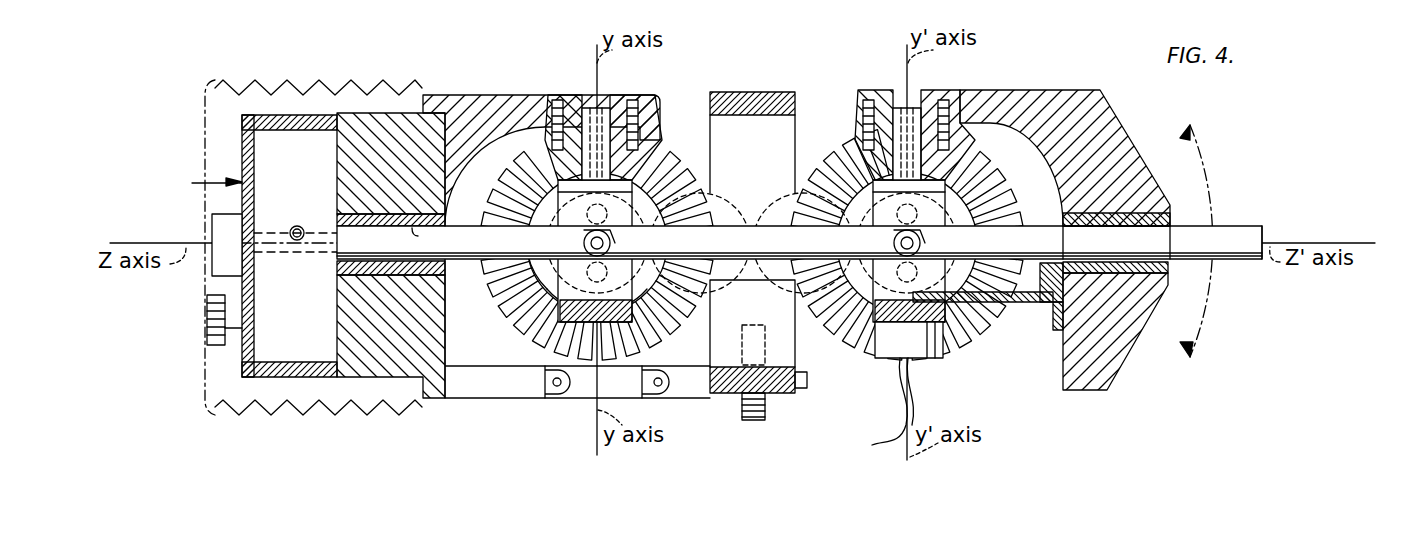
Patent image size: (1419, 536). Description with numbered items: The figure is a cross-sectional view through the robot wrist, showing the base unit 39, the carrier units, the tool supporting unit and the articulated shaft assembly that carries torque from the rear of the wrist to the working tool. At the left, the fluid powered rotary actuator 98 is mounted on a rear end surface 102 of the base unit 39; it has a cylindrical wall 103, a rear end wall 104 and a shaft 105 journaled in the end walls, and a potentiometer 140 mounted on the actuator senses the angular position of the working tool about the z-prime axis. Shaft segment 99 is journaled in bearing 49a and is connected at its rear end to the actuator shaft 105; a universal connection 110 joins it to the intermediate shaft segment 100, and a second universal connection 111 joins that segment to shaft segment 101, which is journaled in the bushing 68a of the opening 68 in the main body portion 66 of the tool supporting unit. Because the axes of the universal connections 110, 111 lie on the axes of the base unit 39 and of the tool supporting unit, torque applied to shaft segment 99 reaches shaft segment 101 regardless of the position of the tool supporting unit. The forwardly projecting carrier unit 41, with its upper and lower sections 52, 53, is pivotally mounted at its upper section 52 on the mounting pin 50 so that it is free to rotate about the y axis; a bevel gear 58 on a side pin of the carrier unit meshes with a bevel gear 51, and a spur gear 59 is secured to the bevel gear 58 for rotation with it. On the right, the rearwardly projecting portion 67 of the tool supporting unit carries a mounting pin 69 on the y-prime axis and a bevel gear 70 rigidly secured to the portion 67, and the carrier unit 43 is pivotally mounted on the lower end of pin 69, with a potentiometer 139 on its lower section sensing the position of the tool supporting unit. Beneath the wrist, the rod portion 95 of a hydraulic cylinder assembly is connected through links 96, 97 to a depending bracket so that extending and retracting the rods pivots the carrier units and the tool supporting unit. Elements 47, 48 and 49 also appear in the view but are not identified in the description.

The base unit 39 is at (443, 93).
The carrier unit 41 is at (520, 185).
The carrier unit 43 is at (950, 200).
The housing block 47 is at (377, 367).
The housing wall 48 is at (522, 93).
The bushing 49 is at (375, 226).
The bearing 49a is at (436, 242).
The mounting pin 50 is at (595, 112).
The bevel gear 51 is at (530, 140).
The upper section 52 is at (560, 187).
The lower section 53 is at (540, 337).
The bevel gear 58 is at (663, 338).
The spur gear 59 is at (500, 310).
The main body portion 66 is at (1112, 358).
The rearwardly projecting portion 67 is at (1027, 90).
The opening 68 is at (1090, 215).
The bushing 68a is at (1173, 230).
The mounting pin 69 is at (947, 90).
The bevel gear 70 is at (840, 125).
The rod portion 95 is at (483, 393).
The link 96 is at (577, 393).
The link 97 is at (698, 390).
The fluid powered rotary actuator 98 is at (200, 184).
The shaft segment 99 is at (512, 251).
The intermediate shaft segment 100 is at (751, 243).
The shaft segment 101 is at (1077, 251).
The rear end surface 102 is at (338, 180).
The cylindrical wall 103 is at (298, 115).
The rear end wall 104 is at (240, 155).
The shaft 105 is at (303, 260).
The universal connection 110 is at (600, 243).
The universal connection 111 is at (935, 243).
The potentiometer 139 is at (933, 353).
The potentiometer 140 is at (208, 230).